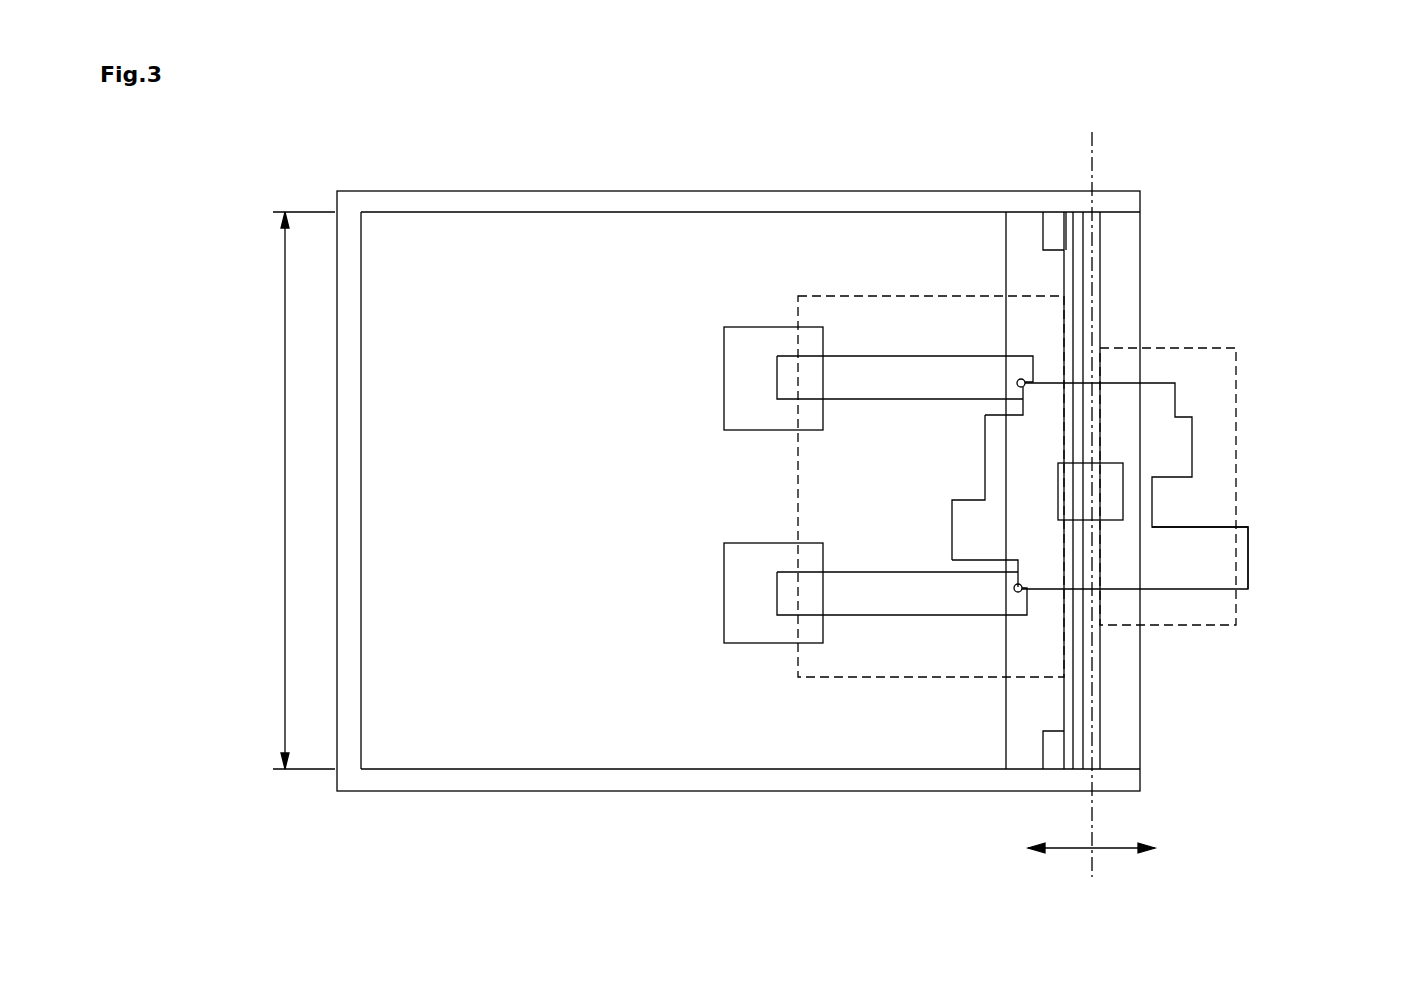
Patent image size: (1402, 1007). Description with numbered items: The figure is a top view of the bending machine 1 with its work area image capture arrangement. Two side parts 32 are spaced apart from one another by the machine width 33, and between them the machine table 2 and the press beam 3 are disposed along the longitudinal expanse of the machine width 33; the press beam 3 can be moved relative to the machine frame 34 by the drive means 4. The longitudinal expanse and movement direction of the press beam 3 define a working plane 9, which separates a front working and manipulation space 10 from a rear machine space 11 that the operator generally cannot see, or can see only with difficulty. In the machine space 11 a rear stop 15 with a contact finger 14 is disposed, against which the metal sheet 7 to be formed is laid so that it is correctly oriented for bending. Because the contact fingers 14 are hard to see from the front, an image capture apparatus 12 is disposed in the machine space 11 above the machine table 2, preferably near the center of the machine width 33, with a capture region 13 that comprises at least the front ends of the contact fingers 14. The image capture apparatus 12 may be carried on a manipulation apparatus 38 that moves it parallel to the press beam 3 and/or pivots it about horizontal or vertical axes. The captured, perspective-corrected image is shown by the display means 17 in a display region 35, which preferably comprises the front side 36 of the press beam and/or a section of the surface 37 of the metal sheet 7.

The bending machine 1 is at (298, 858).
The machine table 2 is at (1130, 740).
The press beam 3 is at (1097, 253).
The drive means 4 is at (1052, 222).
The metal sheet 7 is at (1205, 577).
The working plane 9 is at (1093, 152).
The front working and manipulation space 10 is at (1105, 850).
The rear machine space 11 is at (1078, 850).
The image capture apparatus 12 is at (1075, 500).
The capture region 13 is at (940, 272).
The contact finger 14 is at (855, 375).
The rear stop 15 is at (748, 340).
The display means 17 is at (1118, 468).
The side part 32 is at (1115, 196).
The machine width 33 is at (285, 432).
The machine frame 34 is at (572, 812).
The display region 35 is at (1245, 345).
The front side of the press beam 36 is at (1100, 290).
The surface of the metal sheet 37 is at (1208, 535).
The manipulation apparatus 38 is at (1072, 232).